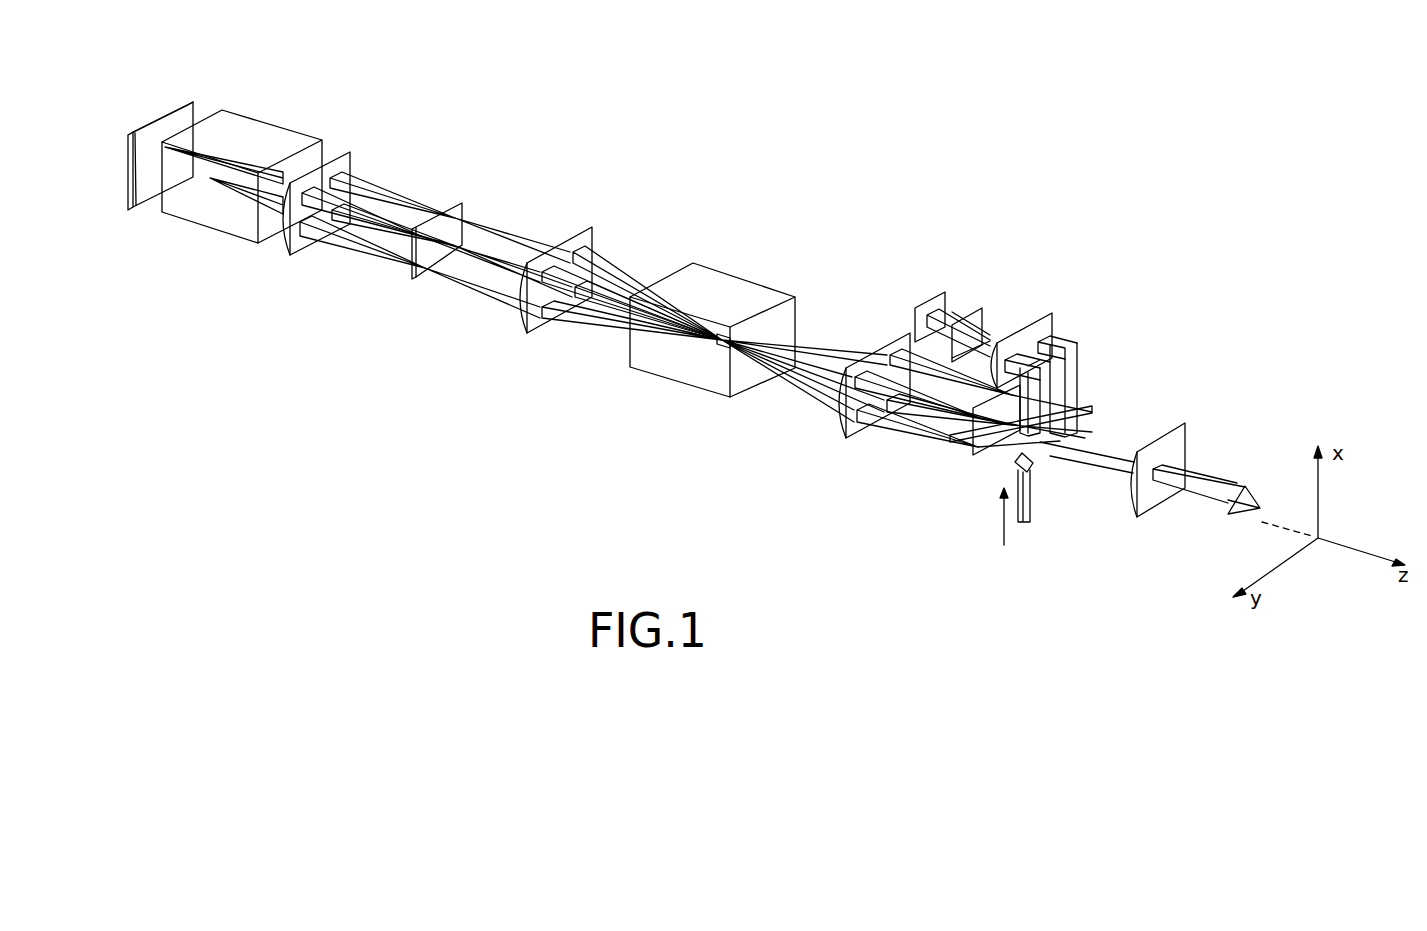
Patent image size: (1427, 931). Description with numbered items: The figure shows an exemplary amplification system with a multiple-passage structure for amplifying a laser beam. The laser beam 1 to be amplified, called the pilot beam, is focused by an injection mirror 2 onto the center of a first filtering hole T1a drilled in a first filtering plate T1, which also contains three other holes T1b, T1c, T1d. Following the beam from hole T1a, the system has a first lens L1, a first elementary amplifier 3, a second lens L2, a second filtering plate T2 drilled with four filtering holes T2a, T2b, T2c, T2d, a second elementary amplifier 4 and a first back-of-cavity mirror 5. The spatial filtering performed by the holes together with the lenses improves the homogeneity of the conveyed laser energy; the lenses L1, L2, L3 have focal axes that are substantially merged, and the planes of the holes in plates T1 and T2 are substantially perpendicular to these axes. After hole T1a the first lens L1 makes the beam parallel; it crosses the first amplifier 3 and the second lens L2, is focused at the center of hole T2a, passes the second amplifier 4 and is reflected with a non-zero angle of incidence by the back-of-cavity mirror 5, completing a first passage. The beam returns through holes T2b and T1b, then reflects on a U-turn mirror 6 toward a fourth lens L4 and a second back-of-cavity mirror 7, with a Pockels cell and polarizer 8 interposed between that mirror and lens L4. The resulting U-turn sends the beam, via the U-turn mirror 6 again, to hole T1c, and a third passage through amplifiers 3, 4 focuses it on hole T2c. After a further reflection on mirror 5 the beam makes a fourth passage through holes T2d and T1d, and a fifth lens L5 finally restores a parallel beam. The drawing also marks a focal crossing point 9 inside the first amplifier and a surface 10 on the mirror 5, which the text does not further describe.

The laser beam 1 is at (1030, 507).
The injection mirror 2 is at (1030, 465).
The first elementary amplifier 3 is at (770, 283).
The second elementary amplifier 4 is at (273, 137).
The first back-of-cavity mirror 5 is at (138, 207).
The U-turn mirror 6 is at (1070, 430).
The second back-of-cavity mirror 7 is at (933, 295).
The Pockels cell and polarizer 8 is at (968, 335).
The focal point 9 is at (715, 347).
The detector surface 10 is at (160, 150).
The first lens L1 is at (853, 440).
The second lens L2 is at (597, 237).
The third lens L3 is at (347, 163).
The fourth lens L4 is at (1055, 322).
The fifth lens L5 is at (1185, 442).
The first filtering plate T1 is at (980, 458).
The first filtering hole T1a is at (973, 455).
The filtering hole T1b is at (1017, 393).
The filtering hole T1c is at (975, 432).
The filtering hole T1d is at (1010, 462).
The second filtering plate T2 is at (447, 203).
The second filtering hole T2a is at (458, 218).
The filtering hole T2b is at (425, 270).
The filtering hole T2c is at (452, 247).
The filtering hole T2d is at (413, 263).